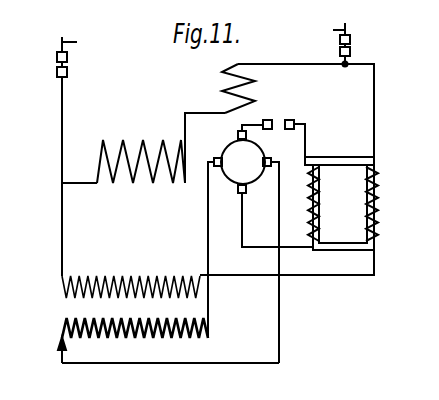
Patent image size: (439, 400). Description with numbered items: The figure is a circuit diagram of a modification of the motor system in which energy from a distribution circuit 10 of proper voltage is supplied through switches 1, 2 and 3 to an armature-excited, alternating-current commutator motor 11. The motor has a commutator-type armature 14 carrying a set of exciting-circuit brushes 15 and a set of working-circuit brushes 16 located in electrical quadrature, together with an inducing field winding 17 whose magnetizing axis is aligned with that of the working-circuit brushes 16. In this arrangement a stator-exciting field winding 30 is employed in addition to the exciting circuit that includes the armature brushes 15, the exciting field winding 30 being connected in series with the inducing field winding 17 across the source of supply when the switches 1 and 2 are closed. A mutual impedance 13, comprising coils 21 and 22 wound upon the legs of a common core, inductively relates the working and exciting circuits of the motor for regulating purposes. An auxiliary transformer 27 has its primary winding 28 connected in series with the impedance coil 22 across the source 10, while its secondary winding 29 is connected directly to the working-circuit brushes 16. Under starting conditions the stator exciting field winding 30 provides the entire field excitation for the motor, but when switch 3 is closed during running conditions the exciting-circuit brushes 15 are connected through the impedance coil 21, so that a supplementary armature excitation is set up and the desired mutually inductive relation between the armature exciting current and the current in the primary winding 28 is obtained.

The switch 1 is at (57, 63).
The switch 2 is at (350, 52).
The switch 3 is at (283, 122).
The distribution circuit 10 is at (203, 37).
The alternating-current commutator motor 11 is at (297, 162).
The mutual impedance 13 is at (352, 221).
The armature 14 is at (243, 162).
The exciting-circuit brushes 15 is at (238, 189).
The working-circuit brushes 16 is at (266, 158).
The inducing field winding 17 is at (151, 134).
The impedance coil 21 is at (309, 211).
The impedance coil 22 is at (369, 211).
The auxiliary transformer 27 is at (50, 322).
The primary winding 28 is at (117, 284).
The secondary winding 29 is at (111, 331).
The stator-exciting field winding 30 is at (222, 100).